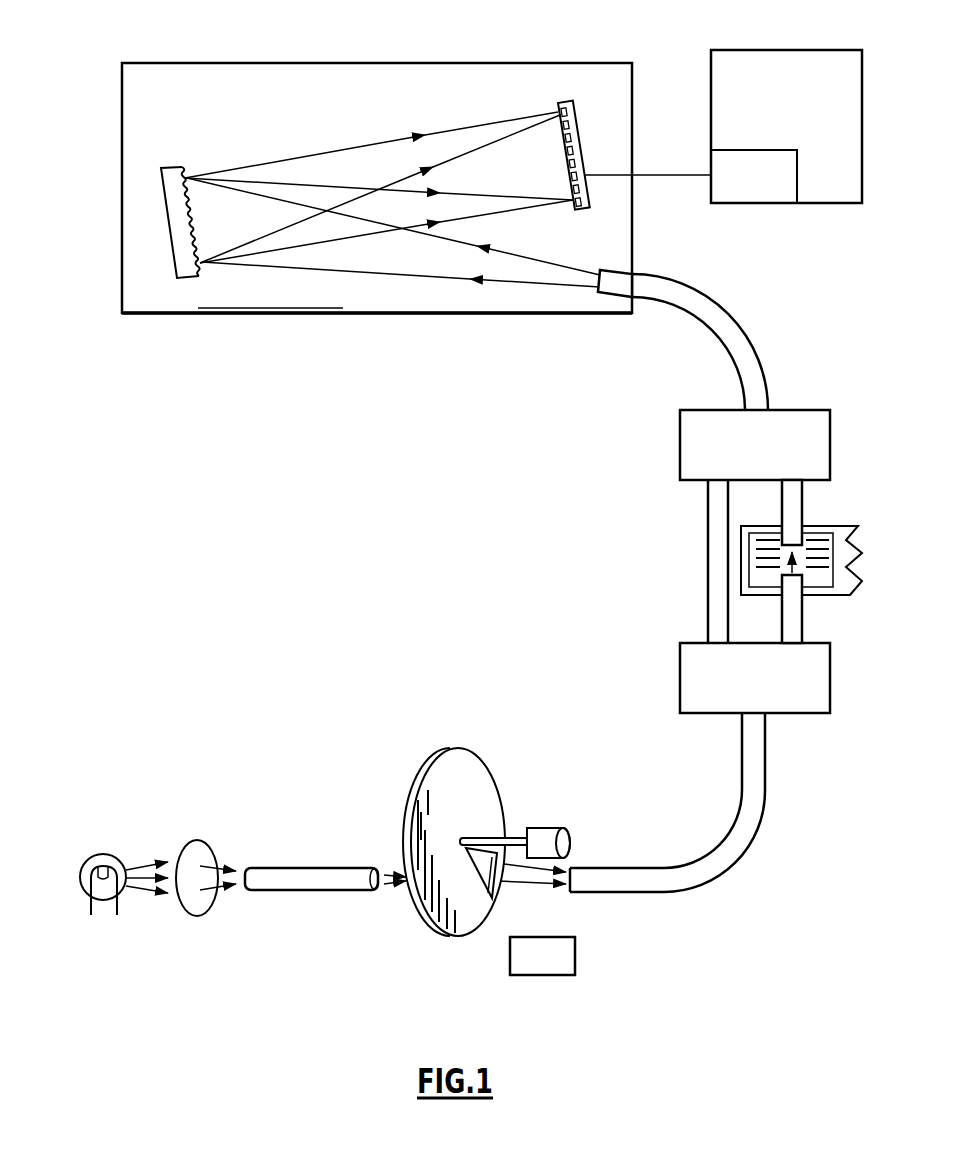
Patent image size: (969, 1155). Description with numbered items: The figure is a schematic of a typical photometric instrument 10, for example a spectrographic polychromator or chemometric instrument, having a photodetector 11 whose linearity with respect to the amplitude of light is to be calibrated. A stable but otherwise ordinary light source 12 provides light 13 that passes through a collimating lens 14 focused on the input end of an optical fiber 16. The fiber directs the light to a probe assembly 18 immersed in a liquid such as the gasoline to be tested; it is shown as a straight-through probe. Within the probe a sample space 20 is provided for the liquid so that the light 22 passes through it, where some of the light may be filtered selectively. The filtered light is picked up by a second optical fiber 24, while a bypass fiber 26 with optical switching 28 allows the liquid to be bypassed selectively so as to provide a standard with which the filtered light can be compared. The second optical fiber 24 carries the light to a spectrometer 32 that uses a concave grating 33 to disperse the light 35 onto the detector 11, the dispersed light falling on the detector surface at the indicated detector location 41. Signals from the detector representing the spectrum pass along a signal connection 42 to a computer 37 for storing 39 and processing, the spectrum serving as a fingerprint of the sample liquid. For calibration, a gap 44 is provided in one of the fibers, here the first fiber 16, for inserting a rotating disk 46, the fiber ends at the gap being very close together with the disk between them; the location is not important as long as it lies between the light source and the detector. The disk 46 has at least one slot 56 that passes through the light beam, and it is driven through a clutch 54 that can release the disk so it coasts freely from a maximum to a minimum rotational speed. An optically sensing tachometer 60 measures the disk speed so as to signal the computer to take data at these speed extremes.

The photometric instrument 10 is at (188, 573).
The photodetector 11 is at (556, 107).
The light source 12 is at (93, 860).
The light 13 is at (146, 862).
The collimating lens 14 is at (194, 841).
The optical fiber 16 is at (314, 891).
The probe assembly 18 is at (821, 552).
The sample space 20 is at (833, 567).
The light 22 is at (797, 569).
The second optical fiber 24 is at (716, 303).
The bypass fiber 26 is at (708, 563).
The optical switching 28 is at (832, 447).
The spectrometer 32 is at (207, 314).
The concave grating 33 is at (183, 281).
The dispersed light 35 is at (310, 156).
The computer 37 is at (788, 50).
The storing 39 is at (757, 204).
The detector element 41 is at (560, 176).
The data line 42 is at (648, 175).
The gap 44 is at (392, 860).
The rotating disk 46 is at (452, 937).
The clutch 54 is at (570, 838).
The slot 56 is at (470, 896).
The optically sensing tachometer 60 is at (543, 976).